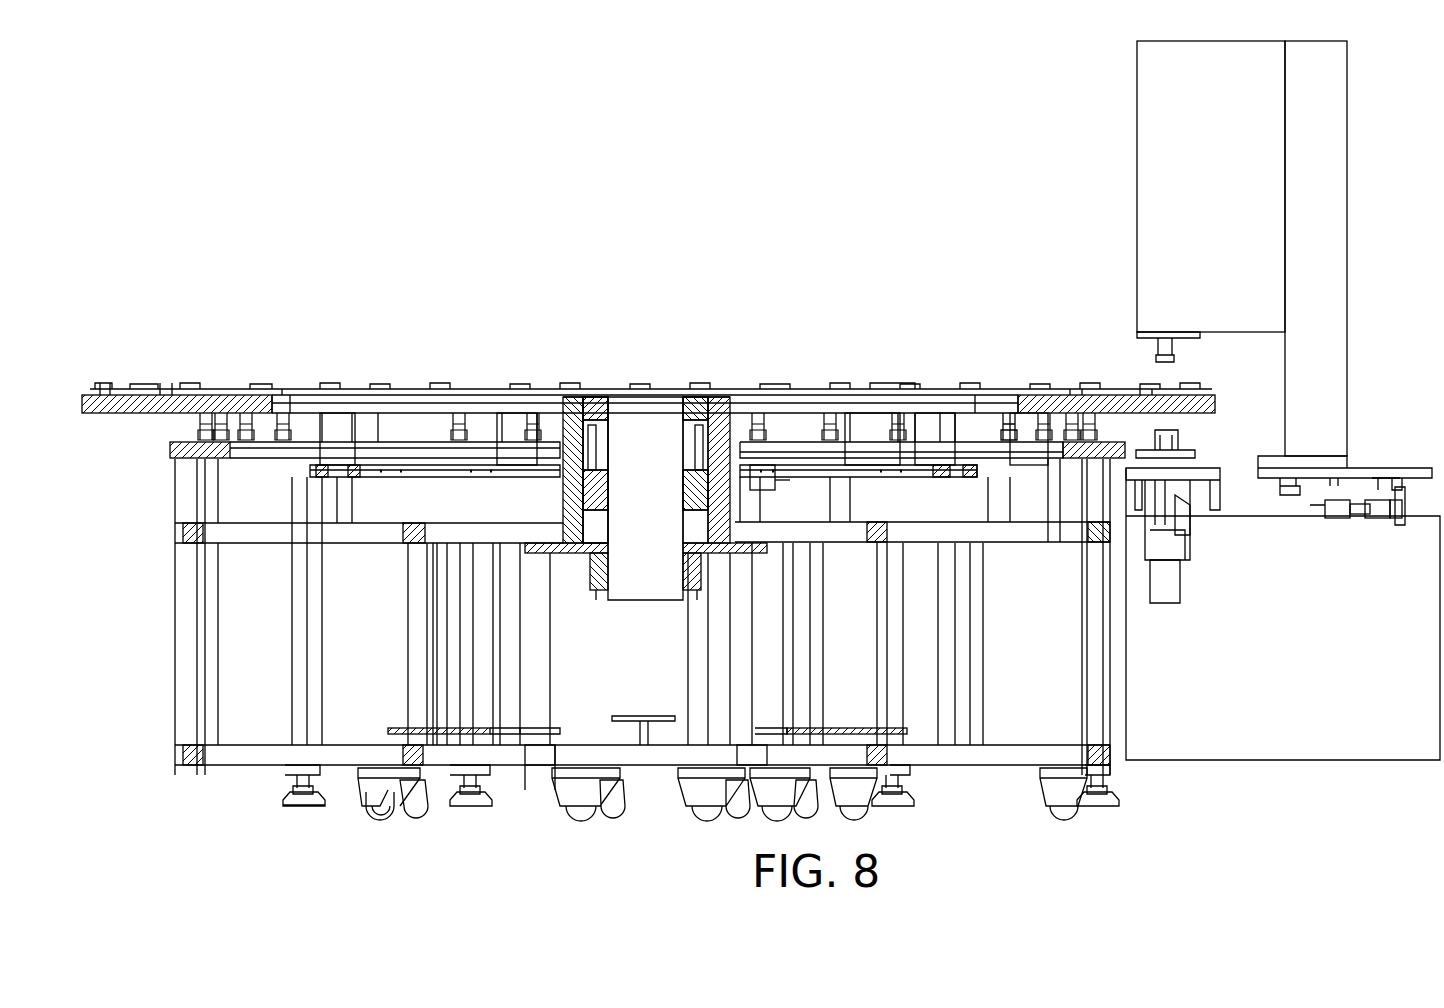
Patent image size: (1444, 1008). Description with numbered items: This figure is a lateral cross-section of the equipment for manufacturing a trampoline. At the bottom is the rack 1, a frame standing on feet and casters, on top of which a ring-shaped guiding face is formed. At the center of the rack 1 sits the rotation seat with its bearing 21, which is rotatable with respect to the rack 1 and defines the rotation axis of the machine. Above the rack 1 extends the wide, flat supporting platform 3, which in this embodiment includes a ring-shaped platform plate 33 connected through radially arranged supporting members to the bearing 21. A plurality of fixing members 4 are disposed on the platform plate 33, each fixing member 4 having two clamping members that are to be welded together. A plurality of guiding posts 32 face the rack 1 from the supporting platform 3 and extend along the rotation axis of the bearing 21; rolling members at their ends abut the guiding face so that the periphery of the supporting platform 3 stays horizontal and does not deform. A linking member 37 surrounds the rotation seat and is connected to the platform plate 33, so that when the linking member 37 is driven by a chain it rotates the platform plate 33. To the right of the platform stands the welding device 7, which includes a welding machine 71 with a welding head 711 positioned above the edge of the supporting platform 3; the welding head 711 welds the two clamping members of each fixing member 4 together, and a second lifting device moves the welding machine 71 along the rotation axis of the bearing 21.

The rack 1 is at (160, 651).
The supporting platform 3 is at (290, 340).
The linking member 37 is at (468, 470).
The bearing 21 is at (668, 430).
The fixing member 4 is at (893, 385).
The guiding post 32 is at (1000, 432).
The platform plate 33 is at (1040, 400).
The welding device 7 is at (1370, 160).
The welding machine 71 is at (1168, 122).
The welding head 711 is at (1158, 352).